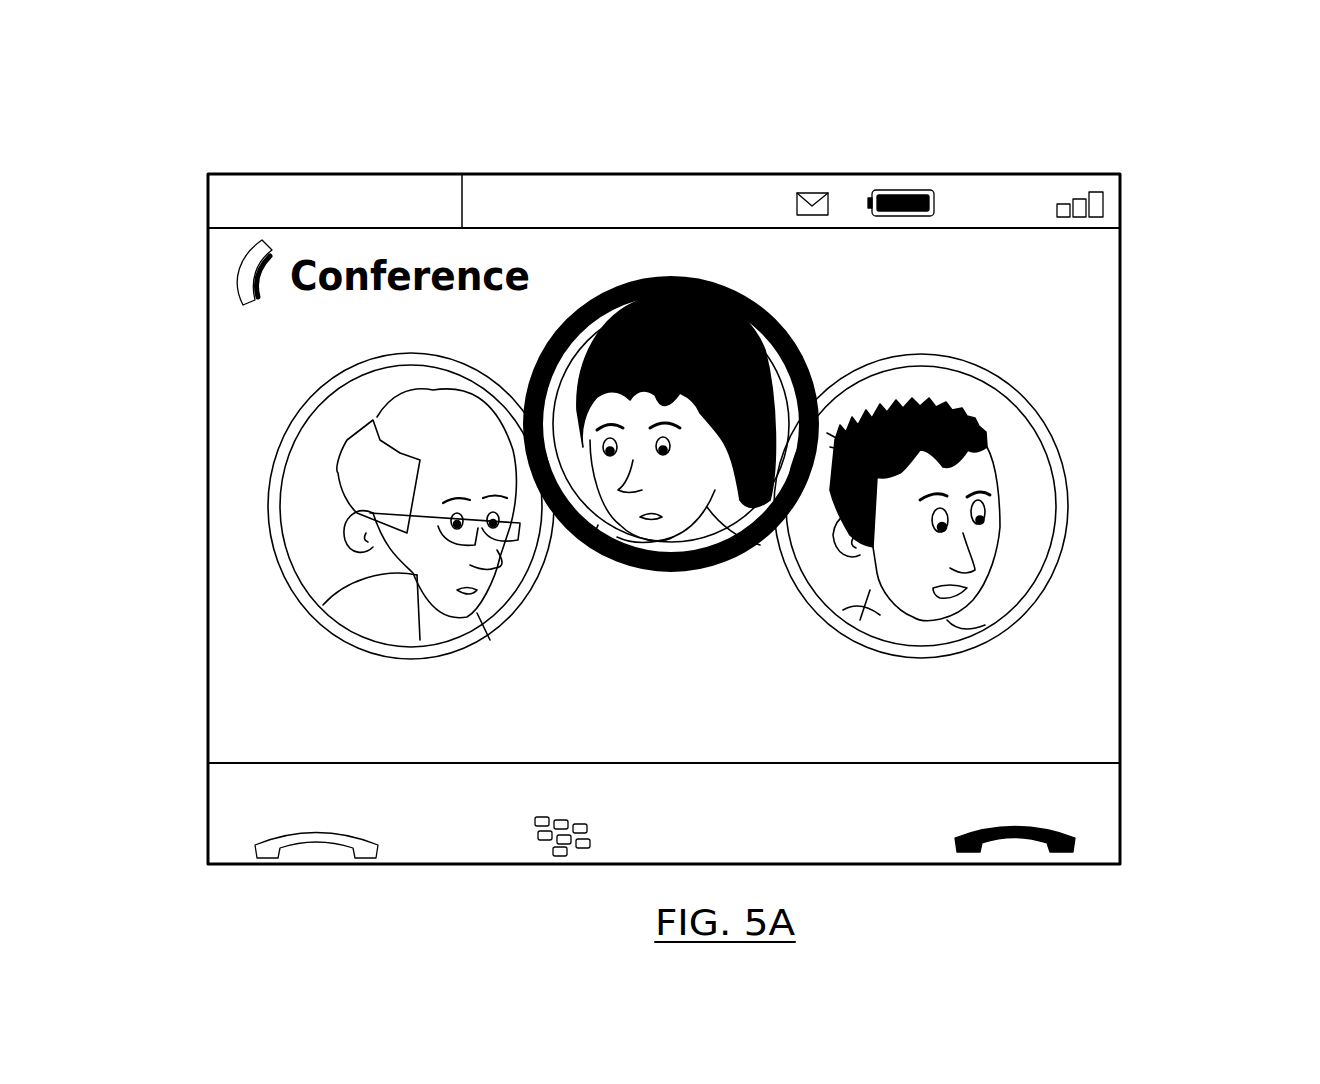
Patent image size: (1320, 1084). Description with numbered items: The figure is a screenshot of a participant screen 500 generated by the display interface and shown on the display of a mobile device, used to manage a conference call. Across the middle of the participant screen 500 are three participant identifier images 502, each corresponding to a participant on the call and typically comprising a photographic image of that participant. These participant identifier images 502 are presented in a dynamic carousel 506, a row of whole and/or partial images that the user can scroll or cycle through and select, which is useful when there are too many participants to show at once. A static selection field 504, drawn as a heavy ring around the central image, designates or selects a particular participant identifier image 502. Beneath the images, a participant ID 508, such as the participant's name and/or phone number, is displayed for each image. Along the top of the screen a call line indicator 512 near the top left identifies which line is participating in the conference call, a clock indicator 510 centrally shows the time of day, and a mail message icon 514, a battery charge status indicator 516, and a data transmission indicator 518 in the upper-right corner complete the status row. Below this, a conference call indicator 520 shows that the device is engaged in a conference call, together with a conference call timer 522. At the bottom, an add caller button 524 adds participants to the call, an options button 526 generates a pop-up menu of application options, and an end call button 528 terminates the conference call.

The participant screen 500 is at (1185, 160).
The participant identifier image 502 is at (672, 400).
The static selection field 504 is at (580, 305).
The dynamic carousel 506 is at (677, 450).
The participant ID 508 is at (260, 695).
The clock indicator 510 is at (663, 182).
The call line indicator 512 is at (300, 185).
The mail message icon 514 is at (822, 176).
The battery charge status indicator 516 is at (920, 176).
The data transmission indicator 518 is at (1022, 178).
The conference call indicator 520 is at (238, 268).
The conference call timer 522 is at (253, 328).
The add caller button 524 is at (235, 797).
The options button 526 is at (520, 828).
The end call button 528 is at (1103, 800).